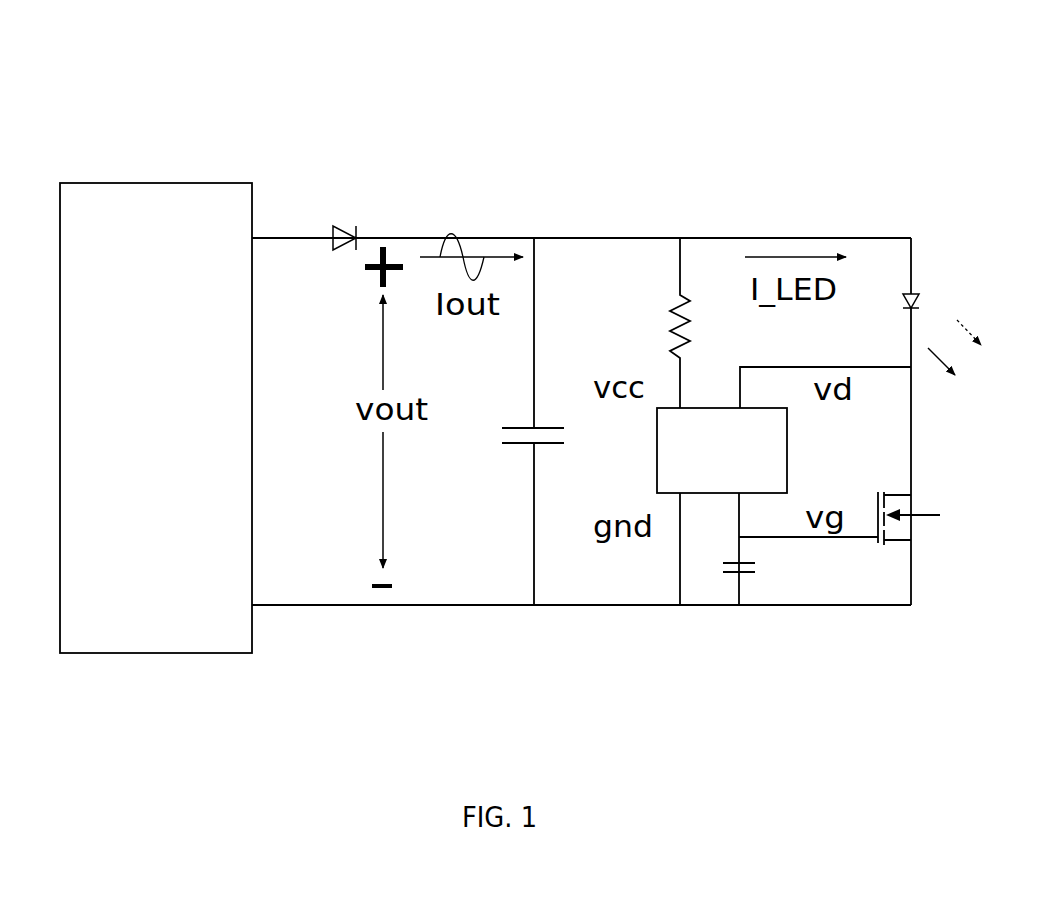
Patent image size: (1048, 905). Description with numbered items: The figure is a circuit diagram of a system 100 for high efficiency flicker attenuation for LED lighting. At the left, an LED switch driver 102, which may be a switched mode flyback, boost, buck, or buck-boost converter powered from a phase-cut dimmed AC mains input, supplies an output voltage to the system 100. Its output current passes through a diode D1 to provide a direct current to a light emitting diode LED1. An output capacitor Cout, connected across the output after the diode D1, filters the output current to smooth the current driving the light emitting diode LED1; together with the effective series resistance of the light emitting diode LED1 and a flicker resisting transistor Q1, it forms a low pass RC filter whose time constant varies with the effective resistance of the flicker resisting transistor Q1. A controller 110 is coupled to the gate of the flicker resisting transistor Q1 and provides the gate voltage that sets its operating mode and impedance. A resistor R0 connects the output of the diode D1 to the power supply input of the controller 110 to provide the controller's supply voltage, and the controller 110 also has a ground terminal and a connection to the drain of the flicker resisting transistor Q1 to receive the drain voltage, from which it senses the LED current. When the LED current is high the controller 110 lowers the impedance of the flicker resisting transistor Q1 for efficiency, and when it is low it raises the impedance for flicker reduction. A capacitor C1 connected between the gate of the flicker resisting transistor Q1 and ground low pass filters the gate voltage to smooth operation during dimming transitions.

The system 100 is at (365, 74).
The LED switch driver 102 is at (181, 529).
The controller 110 is at (732, 469).
The diode D1 is at (339, 216).
The output capacitor Cout is at (507, 421).
The resistor R0 is at (700, 323).
The capacitor C1 is at (754, 566).
The flicker resisting transistor Q1 is at (894, 504).
The light emitting diode LED1 is at (942, 321).